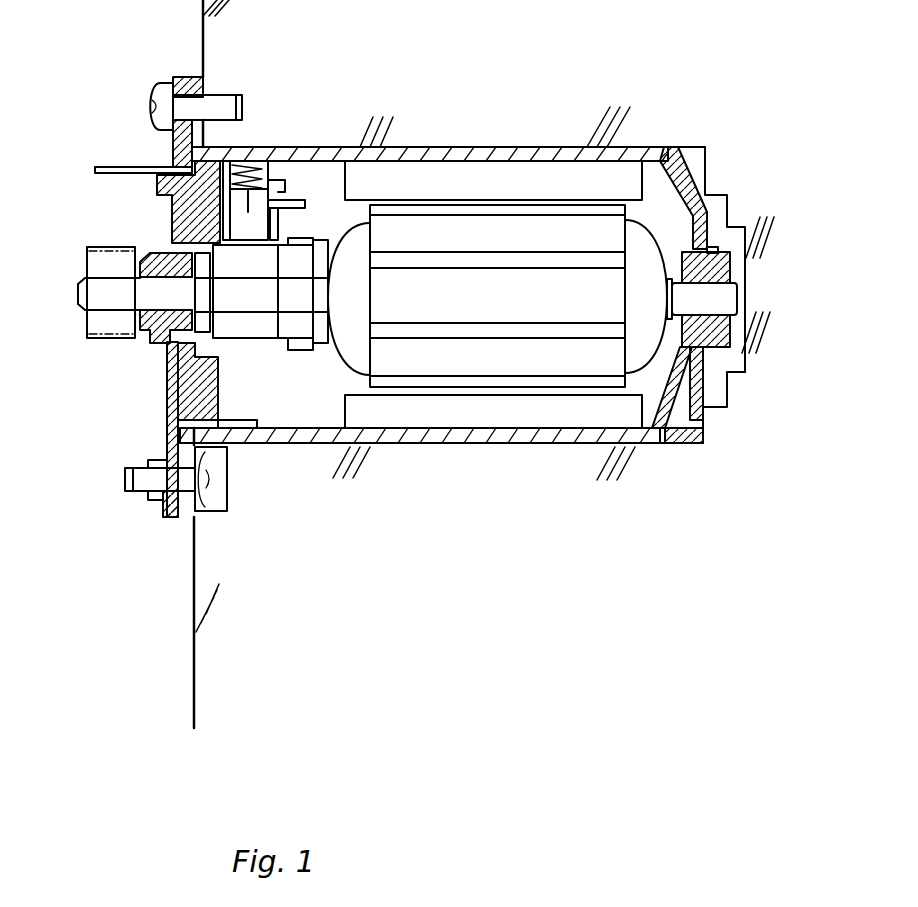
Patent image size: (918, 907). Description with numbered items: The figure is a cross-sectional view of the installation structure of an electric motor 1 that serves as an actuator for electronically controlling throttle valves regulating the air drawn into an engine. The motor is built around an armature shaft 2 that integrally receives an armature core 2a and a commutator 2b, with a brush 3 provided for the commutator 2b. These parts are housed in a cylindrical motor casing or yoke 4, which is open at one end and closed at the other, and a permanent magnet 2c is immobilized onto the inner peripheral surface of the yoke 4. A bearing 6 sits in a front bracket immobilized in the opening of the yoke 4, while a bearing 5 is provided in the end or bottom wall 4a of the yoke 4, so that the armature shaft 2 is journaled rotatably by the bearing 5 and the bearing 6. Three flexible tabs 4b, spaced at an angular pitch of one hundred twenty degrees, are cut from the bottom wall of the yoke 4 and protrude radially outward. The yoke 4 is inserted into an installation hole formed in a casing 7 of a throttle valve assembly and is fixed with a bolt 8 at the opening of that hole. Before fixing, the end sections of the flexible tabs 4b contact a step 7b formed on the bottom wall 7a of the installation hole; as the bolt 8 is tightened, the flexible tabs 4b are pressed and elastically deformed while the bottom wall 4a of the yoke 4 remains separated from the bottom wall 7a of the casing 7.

The electric motor 1 is at (120, 448).
The armature shaft 2 is at (712, 300).
The armature core 2a is at (602, 243).
The commutator 2b is at (265, 258).
The permanent magnet 2c is at (458, 415).
The brush 3 is at (247, 210).
The yoke 4 is at (432, 148).
The bottom wall of the yoke 4a is at (703, 228).
The flexible tabs 4b is at (698, 387).
The bearing 5 is at (727, 270).
The bearing 6 is at (157, 245).
The casing 7 is at (194, 608).
The bottom wall of the installation hole 7a is at (738, 345).
The step 7b is at (692, 445).
The bolt 8 is at (158, 95).